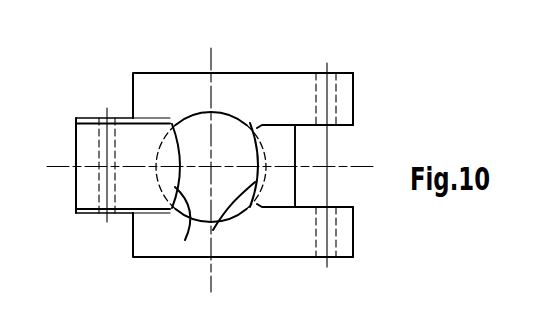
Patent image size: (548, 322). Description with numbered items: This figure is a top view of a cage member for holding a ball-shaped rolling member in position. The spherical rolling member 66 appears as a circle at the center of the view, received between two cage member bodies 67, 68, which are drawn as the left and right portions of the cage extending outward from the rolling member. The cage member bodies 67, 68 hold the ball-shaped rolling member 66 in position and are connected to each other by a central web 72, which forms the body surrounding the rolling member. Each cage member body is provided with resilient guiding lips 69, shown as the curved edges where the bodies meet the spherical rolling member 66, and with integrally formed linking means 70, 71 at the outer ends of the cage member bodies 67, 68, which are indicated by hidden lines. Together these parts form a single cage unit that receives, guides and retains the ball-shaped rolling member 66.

The ball-shaped rolling member 66 is at (228, 132).
The cage member body 67 is at (137, 137).
The cage member body 68 is at (280, 133).
The resilient guiding lips 69 is at (213, 230).
The linking means 70 is at (85, 117).
The linking means 71 is at (343, 85).
The central web 72 is at (183, 88).